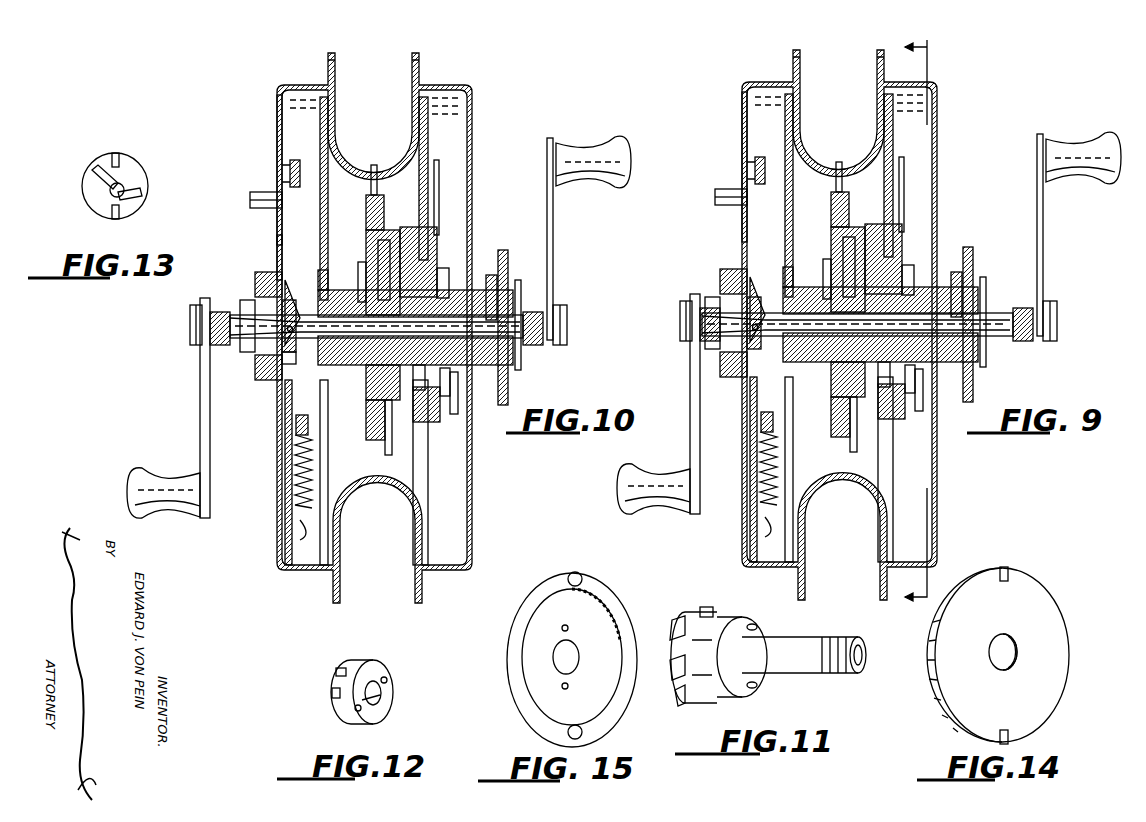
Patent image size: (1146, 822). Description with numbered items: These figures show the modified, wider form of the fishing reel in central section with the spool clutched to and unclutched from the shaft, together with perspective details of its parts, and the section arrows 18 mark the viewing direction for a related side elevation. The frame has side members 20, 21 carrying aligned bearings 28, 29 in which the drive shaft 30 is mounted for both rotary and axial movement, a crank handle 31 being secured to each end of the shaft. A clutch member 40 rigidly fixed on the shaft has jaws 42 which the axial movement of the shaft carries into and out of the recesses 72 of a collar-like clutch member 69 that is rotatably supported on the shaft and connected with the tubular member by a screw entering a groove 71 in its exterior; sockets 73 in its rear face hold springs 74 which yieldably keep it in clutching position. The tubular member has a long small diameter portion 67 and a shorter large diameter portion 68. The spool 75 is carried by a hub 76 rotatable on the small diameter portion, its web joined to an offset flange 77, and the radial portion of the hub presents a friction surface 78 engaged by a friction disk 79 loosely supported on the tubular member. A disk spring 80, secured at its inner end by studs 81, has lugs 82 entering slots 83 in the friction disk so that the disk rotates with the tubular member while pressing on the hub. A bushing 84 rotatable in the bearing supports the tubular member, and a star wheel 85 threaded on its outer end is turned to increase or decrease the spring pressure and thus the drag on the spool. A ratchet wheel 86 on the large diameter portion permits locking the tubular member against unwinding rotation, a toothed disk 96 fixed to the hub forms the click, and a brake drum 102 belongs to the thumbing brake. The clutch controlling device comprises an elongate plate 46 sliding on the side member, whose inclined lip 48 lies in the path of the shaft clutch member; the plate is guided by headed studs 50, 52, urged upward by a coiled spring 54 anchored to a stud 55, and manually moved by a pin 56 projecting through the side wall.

In FIG. 9, the section arrows 18— 18 is at (921, 321).
In FIG. 10, the side member 20 is at (475, 118).
In FIG. 9, the side member 20 is at (871, 325).
In FIG. 10, the side member 21 is at (277, 120).
In FIG. 9, the side member 21 is at (708, 167).
In FIG. 10, the bearing 28 is at (505, 280).
In FIG. 9, the bearing 28 is at (963, 307).
In FIG. 10, the bearing 29 is at (262, 380).
In FIG. 9, the bearing 29 is at (720, 344).
In FIG. 10, the drive shaft 30 is at (242, 318).
In FIG. 9, the drive shaft 30 is at (980, 333).
In FIG. 10, the crank handle 31 is at (203, 370).
In FIG. 9, the crank handle 31 is at (690, 370).
In FIG. 10, the clutch member 40 is at (250, 345).
In FIG. 9, the clutch member 40 is at (741, 347).
In FIG. 10, the jaws 42 is at (296, 340).
In FIG. 9, the jaws 42 is at (717, 311).
In FIG. 10, the elongate plate 46 is at (278, 238).
In FIG. 10, the inclined lip 48 is at (294, 364).
In FIG. 10, the headed stud 50 is at (294, 162).
In FIG. 9, the headed stud 50 is at (769, 151).
In FIG. 10, the headed stud 52 is at (300, 432).
In FIG. 9, the headed stud 52 is at (779, 414).
In FIG. 10, the coiled spring 54 is at (312, 478).
In FIG. 9, the coiled spring 54 is at (791, 469).
In FIG. 10, the stud 55 is at (306, 522).
In FIG. 9, the stud 55 is at (769, 535).
In FIG. 10, the pin 56 is at (258, 195).
In FIG. 9, the pin 56 is at (703, 189).
In FIG. 10, the small diameter portion 67 is at (447, 378).
In FIG. 9, the small diameter portion 67 is at (918, 386).
In FIG. 10, the large diameter portion 68 is at (366, 385).
In FIG. 9, the large diameter portion 68 is at (832, 405).
In FIG. 13, the large diameter portion 68 is at (148, 198).
In FIG. 12, the large diameter portion 68 is at (381, 694).
In FIG. 11, the large diameter portion 68 is at (725, 700).
In FIG. 10, the clutch member 69 is at (285, 290).
In FIG. 9, the clutch member 69 is at (785, 337).
In FIG. 13, the groove 71 is at (97, 168).
In FIG. 12, the groove 71 is at (340, 670).
In FIG. 13, the recesses 72 is at (118, 158).
In FIG. 12, the recesses 72 is at (333, 691).
In FIG. 12, the sockets 73 is at (385, 677).
In FIG. 10, the springs 74 is at (350, 290).
In FIG. 9, the springs 74 is at (880, 343).
In FIG. 10, the spool 75 is at (338, 118).
In FIG. 9, the spool 75 is at (838, 80).
In FIG. 10, the hub 76 is at (432, 295).
In FIG. 9, the hub 76 is at (881, 269).
In FIG. 10, the flange 77 is at (375, 200).
In FIG. 9, the flange 77 is at (843, 148).
In FIG. 10, the friction surface 78 is at (435, 262).
In FIG. 9, the friction surface 78 is at (897, 259).
In FIG. 10, the friction disk 79 is at (382, 262).
In FIG. 9, the friction disk 79 is at (828, 260).
In FIG. 14, the friction disk 79 is at (962, 660).
In FIG. 10, the disk spring 80 is at (380, 290).
In FIG. 9, the disk spring 80 is at (825, 269).
In FIG. 15, the disk spring 80 is at (592, 625).
In FIG. 10, the studs 81 is at (443, 280).
In FIG. 9, the studs 81 is at (896, 326).
In FIG. 11, the studs 81 is at (758, 628).
In FIG. 10, the lugs 82 is at (380, 225).
In FIG. 9, the lugs 82 is at (855, 316).
In FIG. 15, the lugs 82 is at (582, 580).
In FIG. 10, the slots 83 is at (390, 430).
In FIG. 9, the slots 83 is at (866, 439).
In FIG. 14, the slots 83 is at (1008, 572).
In FIG. 10, the bushing 84 is at (505, 305).
In FIG. 9, the bushing 84 is at (983, 286).
In FIG. 10, the star wheel 85 is at (518, 355).
In FIG. 9, the star wheel 85 is at (1012, 296).
In FIG. 10, the ratchet wheel 86 is at (324, 288).
In FIG. 9, the ratchet wheel 86 is at (780, 256).
In FIG. 11, the ratchet wheel 86 is at (706, 606).
In FIG. 10, the toothed disk 96 is at (452, 400).
In FIG. 9, the toothed disk 96 is at (900, 411).
In FIG. 10, the brake drum 102 is at (436, 235).
In FIG. 9, the brake drum 102 is at (914, 190).